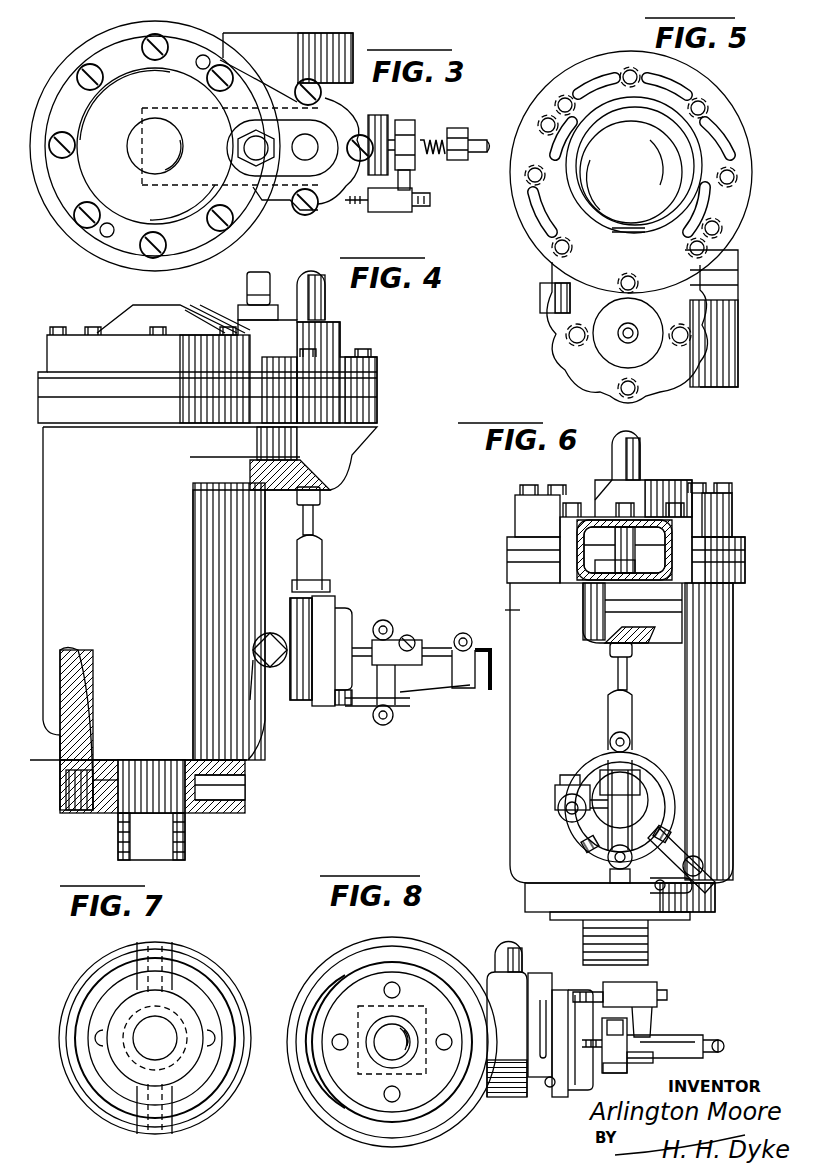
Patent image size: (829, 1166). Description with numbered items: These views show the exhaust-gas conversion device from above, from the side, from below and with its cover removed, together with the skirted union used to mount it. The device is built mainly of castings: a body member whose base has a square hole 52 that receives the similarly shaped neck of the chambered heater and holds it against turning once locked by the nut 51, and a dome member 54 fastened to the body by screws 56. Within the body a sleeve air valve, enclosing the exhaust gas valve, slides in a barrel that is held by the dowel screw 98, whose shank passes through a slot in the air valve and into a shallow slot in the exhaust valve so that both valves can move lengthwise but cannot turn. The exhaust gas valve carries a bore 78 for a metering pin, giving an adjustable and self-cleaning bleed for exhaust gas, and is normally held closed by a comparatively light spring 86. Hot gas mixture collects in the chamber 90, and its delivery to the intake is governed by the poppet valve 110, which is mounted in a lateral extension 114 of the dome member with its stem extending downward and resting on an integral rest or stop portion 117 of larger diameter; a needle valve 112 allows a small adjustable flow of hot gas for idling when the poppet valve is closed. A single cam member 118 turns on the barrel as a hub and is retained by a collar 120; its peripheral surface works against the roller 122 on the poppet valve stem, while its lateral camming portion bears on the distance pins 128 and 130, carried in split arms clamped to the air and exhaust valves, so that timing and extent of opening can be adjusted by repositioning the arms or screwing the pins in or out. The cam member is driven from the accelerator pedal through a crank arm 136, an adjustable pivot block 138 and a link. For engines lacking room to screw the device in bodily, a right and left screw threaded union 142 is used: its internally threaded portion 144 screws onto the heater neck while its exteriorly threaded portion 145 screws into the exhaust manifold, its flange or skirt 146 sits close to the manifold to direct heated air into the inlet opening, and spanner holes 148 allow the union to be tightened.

In FIG. 4, the nut 51 is at (90, 745).
In FIG. 6, the nut 51 is at (626, 728).
In FIG. 7, the nut 51 is at (215, 1018).
In FIG. 8, the nut 51 is at (415, 982).
In FIG. 8, the square hole 52 is at (426, 1074).
In FIG. 3, the dome member 54 is at (95, 185).
In FIG. 4, the dome member 54 is at (115, 330).
In FIG. 6, the dome member 54 is at (660, 488).
In FIG. 4, the screws 56 is at (58, 327).
In FIG. 3, the bore 78 is at (478, 146).
In FIG. 4, the bore 78 is at (458, 646).
In FIG. 3, the spring 86 is at (432, 140).
In FIG. 5, the chamber 90 is at (680, 200).
In FIG. 5, the dowel screw 98 is at (540, 297).
In FIG. 4, the dowel screw 98 is at (270, 667).
In FIG. 8, the dowel screw 98 is at (512, 955).
In FIG. 5, the poppet valve 110 is at (610, 355).
In FIG. 3, the needle valve 112 is at (257, 160).
In FIG. 4, the needle valve 112 is at (247, 298).
In FIG. 4, the lateral extension 114 is at (378, 388).
In FIG. 4, the rest or stop portion 117 is at (498, 601).
In FIG. 6, the rest or stop portion 117 is at (600, 575).
In FIG. 4, the cam member 118 is at (332, 705).
In FIG. 6, the cam member 118 is at (583, 848).
In FIG. 8, the cam member 118 is at (546, 1088).
In FIG. 4, the collar 120 is at (342, 612).
In FIG. 4, the roller 122 is at (318, 588).
In FIG. 3, the distance pin 128 is at (428, 202).
In FIG. 4, the distance pin 128 is at (424, 640).
In FIG. 6, the distance pin 128 is at (558, 808).
In FIG. 8, the distance pin 128 is at (667, 995).
In FIG. 4, the distance pin 130 is at (396, 708).
In FIG. 6, the distance pin 130 is at (607, 860).
In FIG. 8, the distance pin 130 is at (648, 1036).
In FIG. 6, the crank arm 136 is at (712, 898).
In FIG. 6, the adjustable pivot block 138 is at (695, 878).
In FIG. 4, the right and left screw threaded union 142 is at (60, 770).
In FIG. 4, the internally threaded portion 144 is at (100, 805).
In FIG. 4, the exteriorly screw threaded portion 145 is at (188, 845).
In FIG. 6, the exteriorly screw threaded portion 145 is at (650, 945).
In FIG. 7, the exteriorly screw threaded portion 145 is at (178, 1015).
In FIG. 4, the flange or skirt 146 is at (66, 797).
In FIG. 4, the spanner holes 148 is at (235, 785).
In FIG. 7, the spanner holes 148 is at (160, 946).